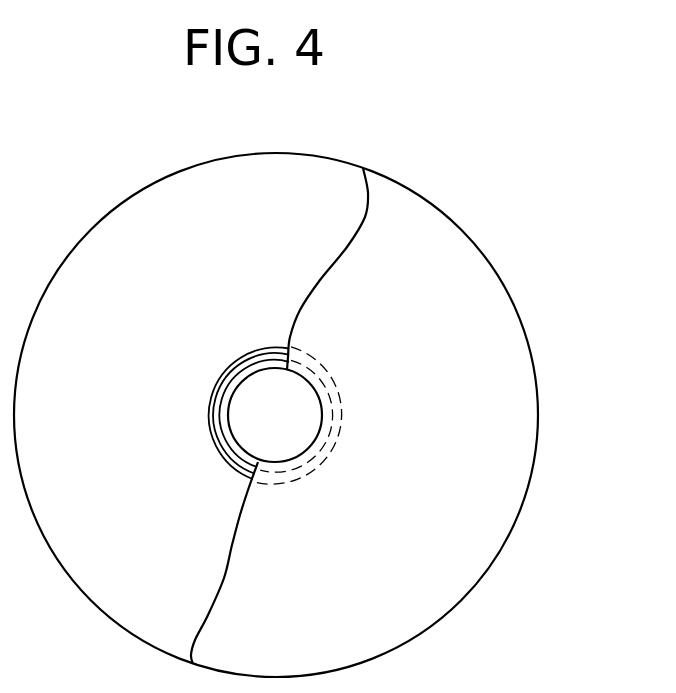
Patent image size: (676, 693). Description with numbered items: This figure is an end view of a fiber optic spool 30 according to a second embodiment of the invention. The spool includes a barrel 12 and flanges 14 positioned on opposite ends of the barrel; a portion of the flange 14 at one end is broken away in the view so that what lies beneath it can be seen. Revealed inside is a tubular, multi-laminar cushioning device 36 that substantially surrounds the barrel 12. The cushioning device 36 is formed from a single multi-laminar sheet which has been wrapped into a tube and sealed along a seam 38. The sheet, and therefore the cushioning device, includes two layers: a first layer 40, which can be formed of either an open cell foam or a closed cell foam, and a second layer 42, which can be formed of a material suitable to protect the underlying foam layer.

The fiber optic spool 30 is at (510, 198).
The flanges 14 is at (105, 234).
The barrel 12 is at (280, 348).
The tubular, multi-laminar cushioning device 36 is at (192, 445).
The seam 38 is at (231, 343).
The first layer 40 is at (236, 474).
The second layer 42 is at (207, 407).